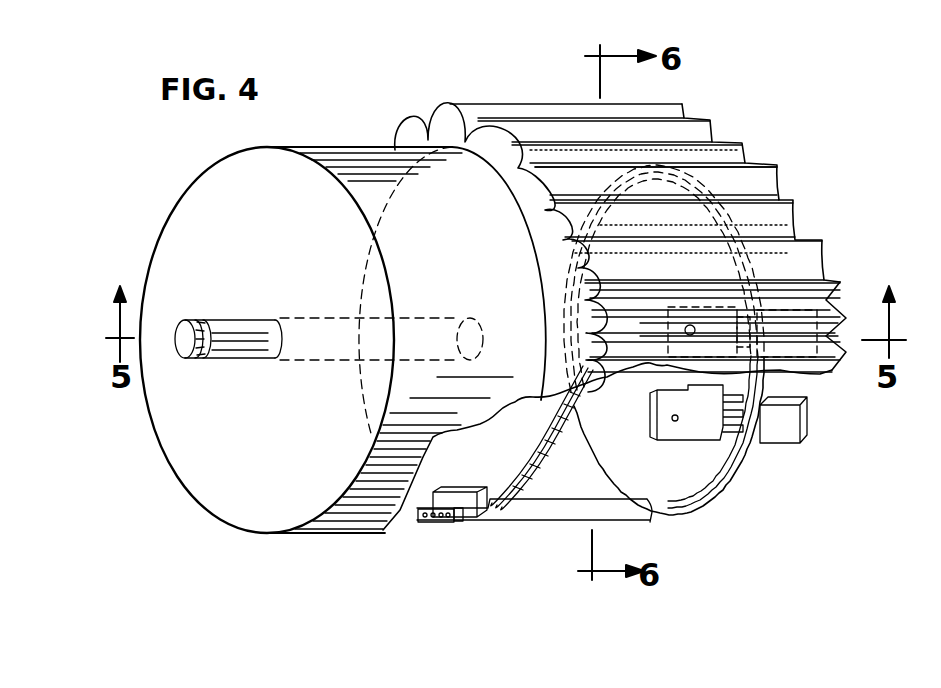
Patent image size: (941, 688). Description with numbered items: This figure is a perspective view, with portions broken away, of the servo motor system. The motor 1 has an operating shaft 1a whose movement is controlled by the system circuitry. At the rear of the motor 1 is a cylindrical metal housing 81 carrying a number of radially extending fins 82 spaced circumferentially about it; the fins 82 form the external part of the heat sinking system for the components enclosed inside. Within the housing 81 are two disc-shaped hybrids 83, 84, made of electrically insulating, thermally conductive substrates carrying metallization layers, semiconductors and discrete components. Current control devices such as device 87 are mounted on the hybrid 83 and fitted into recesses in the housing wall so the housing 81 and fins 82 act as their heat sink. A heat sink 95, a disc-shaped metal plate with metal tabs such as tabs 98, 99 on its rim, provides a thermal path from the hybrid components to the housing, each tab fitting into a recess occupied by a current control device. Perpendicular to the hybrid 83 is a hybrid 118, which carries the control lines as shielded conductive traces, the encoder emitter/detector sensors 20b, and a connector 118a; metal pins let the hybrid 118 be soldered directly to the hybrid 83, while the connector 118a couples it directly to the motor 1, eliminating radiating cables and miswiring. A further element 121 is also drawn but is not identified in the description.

The motor 1 is at (202, 495).
The operating shaft 1a is at (218, 360).
The housing 81 is at (463, 160).
The fins 82 is at (772, 185).
The current control device 87 is at (768, 275).
The tab 98 is at (820, 296).
The tab 99 is at (810, 424).
The hybrid 83 is at (707, 453).
The heat sink 95 is at (733, 472).
The hybrid 84 is at (733, 481).
The hybrid 118 is at (637, 513).
The connector 118a is at (429, 524).
The encoder emitter/detector sensors 20b is at (517, 522).
The flexible strip 121 is at (524, 512).